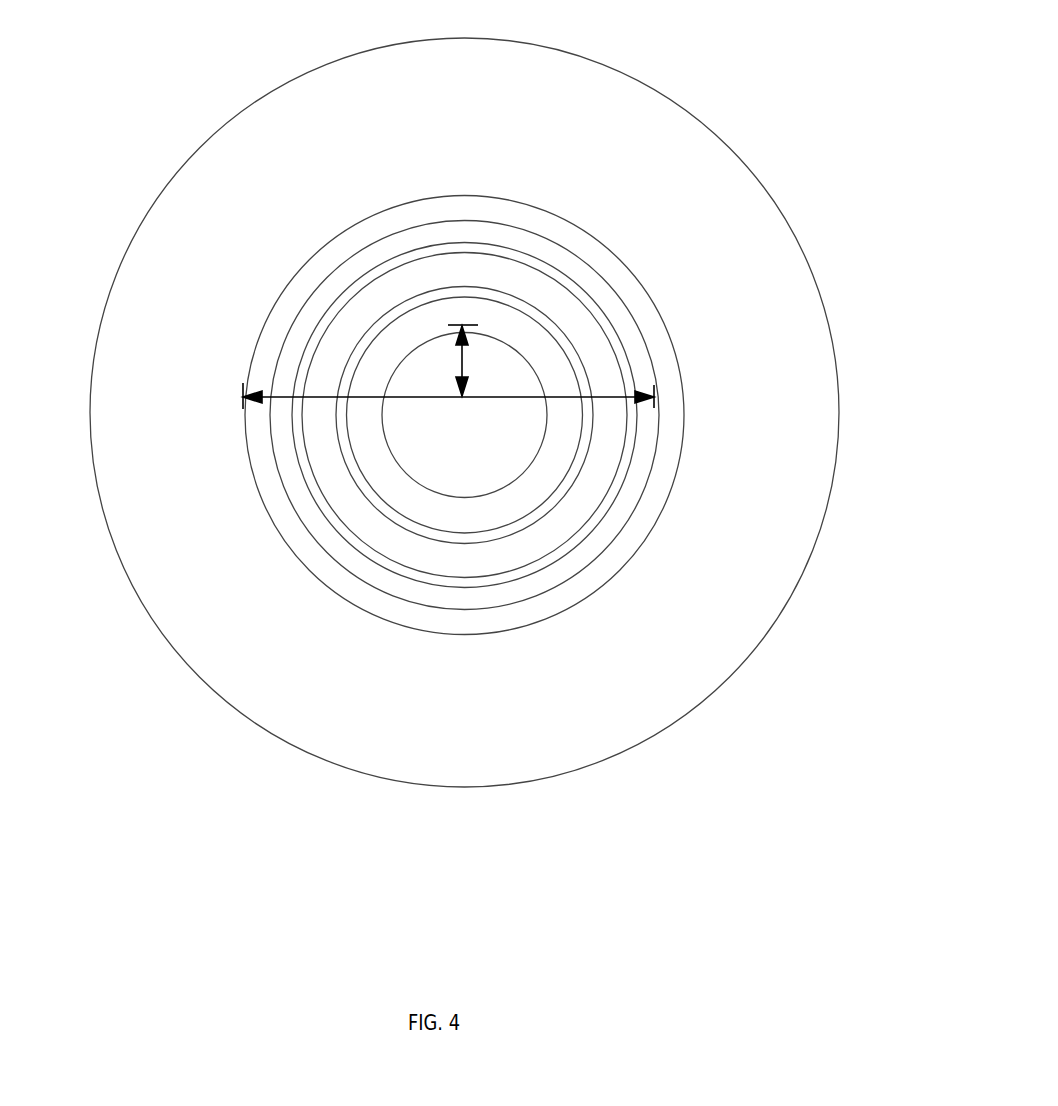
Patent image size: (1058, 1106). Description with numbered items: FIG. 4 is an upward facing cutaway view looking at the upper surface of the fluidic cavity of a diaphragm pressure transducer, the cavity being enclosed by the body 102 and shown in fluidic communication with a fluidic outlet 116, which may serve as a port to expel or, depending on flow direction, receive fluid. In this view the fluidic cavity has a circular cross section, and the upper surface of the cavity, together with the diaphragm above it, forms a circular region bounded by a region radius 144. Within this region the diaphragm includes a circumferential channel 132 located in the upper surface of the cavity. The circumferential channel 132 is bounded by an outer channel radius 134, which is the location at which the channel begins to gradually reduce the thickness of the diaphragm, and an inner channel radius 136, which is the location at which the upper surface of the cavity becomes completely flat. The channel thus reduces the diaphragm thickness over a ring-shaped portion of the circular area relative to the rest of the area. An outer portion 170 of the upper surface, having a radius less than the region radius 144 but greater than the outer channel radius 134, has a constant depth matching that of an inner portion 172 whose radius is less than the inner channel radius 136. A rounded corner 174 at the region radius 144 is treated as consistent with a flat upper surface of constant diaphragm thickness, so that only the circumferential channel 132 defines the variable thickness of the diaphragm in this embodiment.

The body 102 is at (798, 343).
The fluidic outlet 116 is at (500, 367).
The circumferential channel 132 is at (357, 313).
The outer channel radius 134 is at (573, 402).
The inner channel radius 136 is at (460, 360).
The region radius 144 is at (322, 397).
The outer portion 170 is at (284, 303).
The inner portion 172 is at (505, 457).
The rounded corner 174 is at (662, 300).